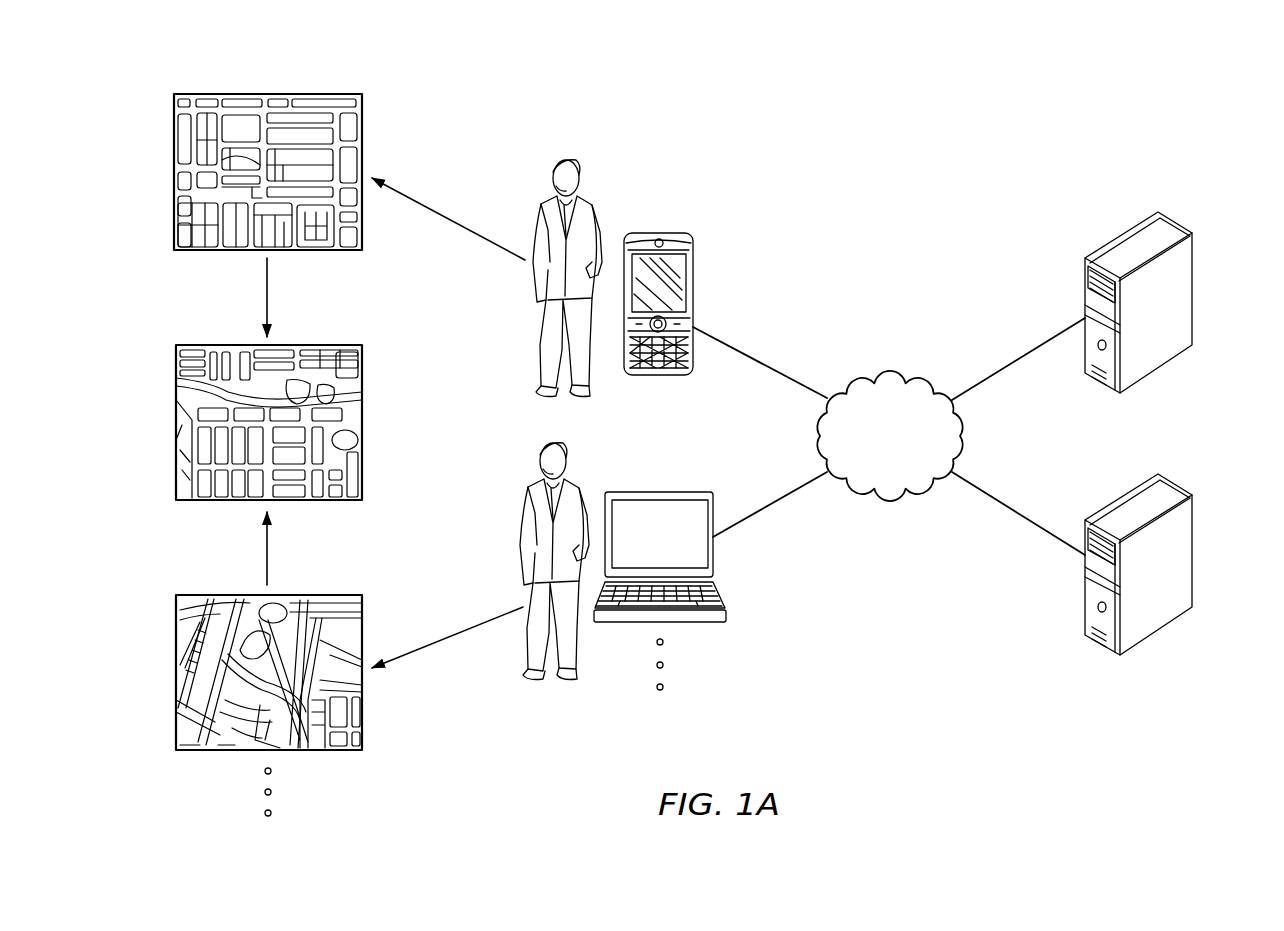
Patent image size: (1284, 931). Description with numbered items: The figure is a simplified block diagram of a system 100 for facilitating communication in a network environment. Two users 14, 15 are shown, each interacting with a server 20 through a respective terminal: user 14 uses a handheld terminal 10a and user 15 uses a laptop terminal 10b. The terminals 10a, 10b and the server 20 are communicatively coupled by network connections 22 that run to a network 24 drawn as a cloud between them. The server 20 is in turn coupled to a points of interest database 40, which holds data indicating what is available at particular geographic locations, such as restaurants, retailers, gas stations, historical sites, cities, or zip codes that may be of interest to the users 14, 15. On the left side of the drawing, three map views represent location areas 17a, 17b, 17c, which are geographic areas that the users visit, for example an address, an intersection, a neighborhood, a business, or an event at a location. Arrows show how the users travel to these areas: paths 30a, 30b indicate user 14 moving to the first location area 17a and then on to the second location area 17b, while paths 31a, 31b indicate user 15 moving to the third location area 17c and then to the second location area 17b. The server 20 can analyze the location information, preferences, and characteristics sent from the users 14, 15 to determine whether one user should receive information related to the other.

The system 100 is at (867, 134).
The terminal 10a is at (658, 233).
The terminal 10b is at (660, 492).
The user 14 is at (562, 160).
The user 15 is at (528, 506).
The location area 17a is at (176, 161).
The location area 17b is at (176, 414).
The location area 17c is at (176, 683).
The server 20 is at (1192, 297).
The network connections 22 is at (765, 365).
The network 24 is at (888, 383).
The path 30a is at (455, 221).
The path 30b is at (267, 292).
The path 31a is at (450, 637).
The path 31b is at (267, 556).
The points of interest database 40 is at (1192, 559).